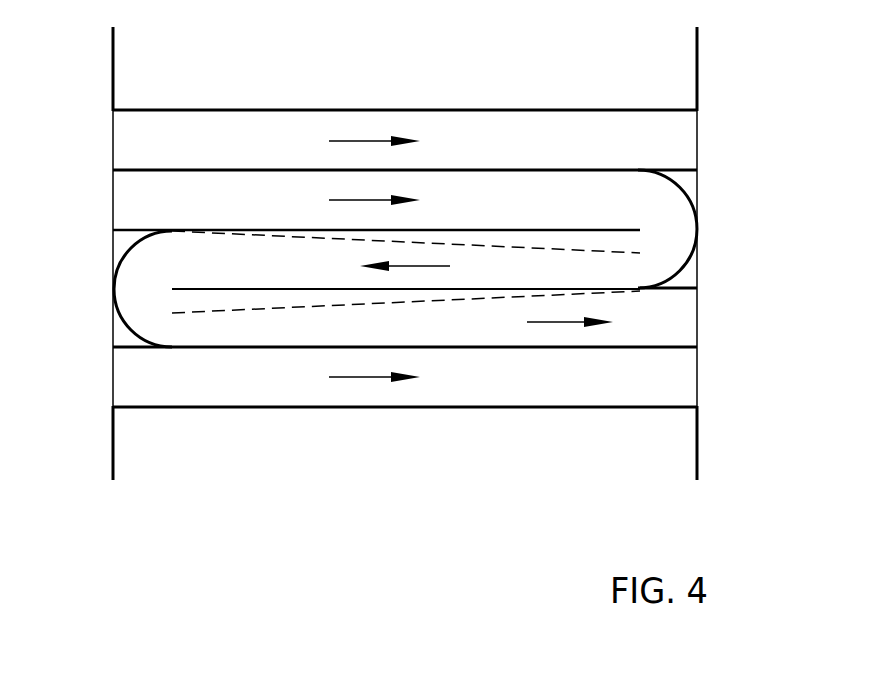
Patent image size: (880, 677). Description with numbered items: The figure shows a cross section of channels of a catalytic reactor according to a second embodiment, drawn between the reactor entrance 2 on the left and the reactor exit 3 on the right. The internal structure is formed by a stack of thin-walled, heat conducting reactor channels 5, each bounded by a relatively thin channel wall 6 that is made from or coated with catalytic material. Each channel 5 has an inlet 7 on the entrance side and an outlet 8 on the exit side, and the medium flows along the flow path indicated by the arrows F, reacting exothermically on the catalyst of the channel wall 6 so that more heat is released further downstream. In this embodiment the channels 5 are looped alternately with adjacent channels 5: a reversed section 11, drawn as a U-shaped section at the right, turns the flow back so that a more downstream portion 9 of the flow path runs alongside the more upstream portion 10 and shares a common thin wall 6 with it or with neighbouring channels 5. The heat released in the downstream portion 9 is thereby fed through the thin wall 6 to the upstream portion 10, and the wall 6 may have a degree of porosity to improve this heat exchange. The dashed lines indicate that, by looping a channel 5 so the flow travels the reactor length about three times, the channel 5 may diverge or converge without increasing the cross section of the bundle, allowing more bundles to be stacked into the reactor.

The reactor entrance 2 is at (113, 82).
The reactor exit 3 is at (697, 82).
The reactor channel 5 is at (405, 253).
The channel wall 6 is at (473, 290).
The inlet 7 is at (130, 140).
The outlet 8 is at (678, 141).
The downstream portion 9 is at (290, 272).
The upstream portion 10 is at (290, 200).
The reversed section 11 is at (666, 229).